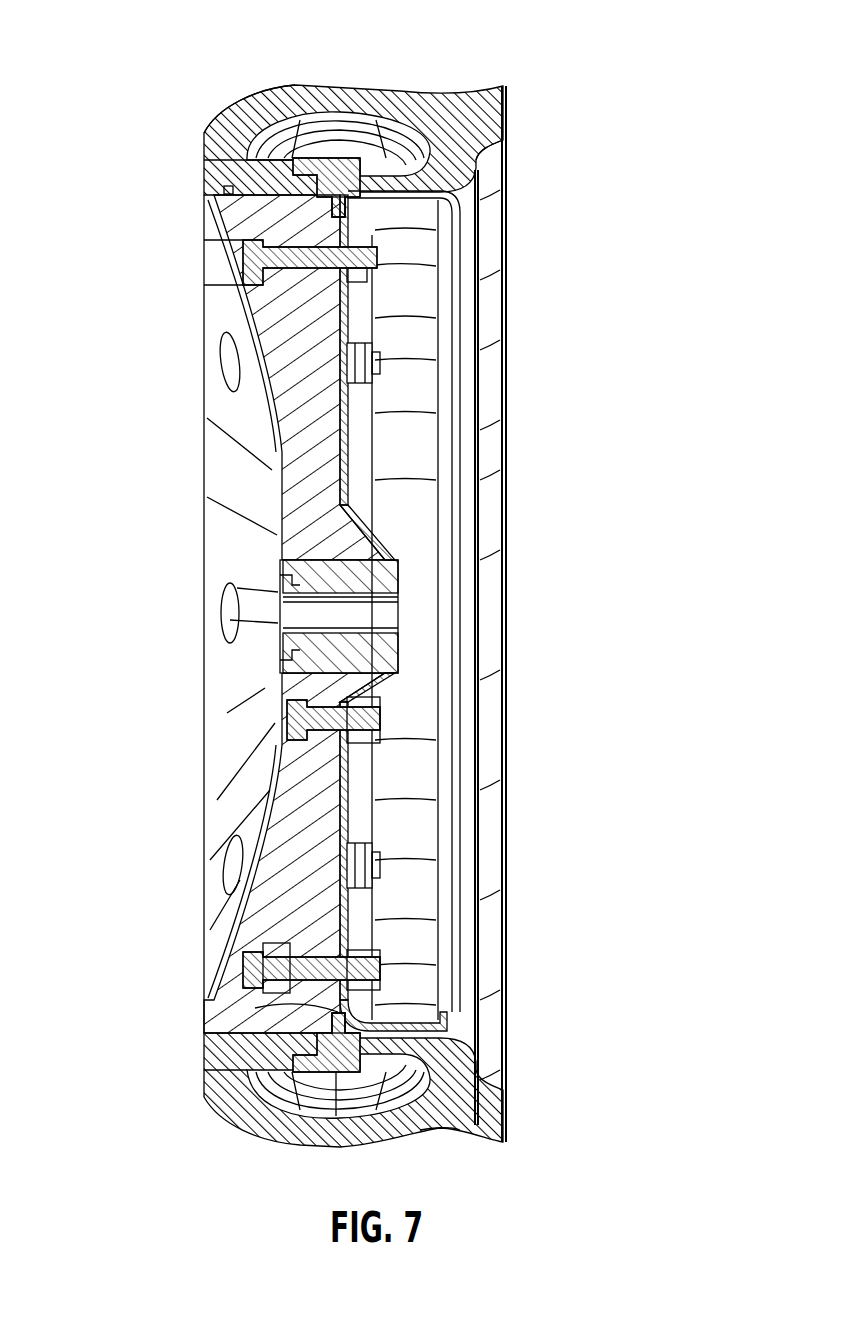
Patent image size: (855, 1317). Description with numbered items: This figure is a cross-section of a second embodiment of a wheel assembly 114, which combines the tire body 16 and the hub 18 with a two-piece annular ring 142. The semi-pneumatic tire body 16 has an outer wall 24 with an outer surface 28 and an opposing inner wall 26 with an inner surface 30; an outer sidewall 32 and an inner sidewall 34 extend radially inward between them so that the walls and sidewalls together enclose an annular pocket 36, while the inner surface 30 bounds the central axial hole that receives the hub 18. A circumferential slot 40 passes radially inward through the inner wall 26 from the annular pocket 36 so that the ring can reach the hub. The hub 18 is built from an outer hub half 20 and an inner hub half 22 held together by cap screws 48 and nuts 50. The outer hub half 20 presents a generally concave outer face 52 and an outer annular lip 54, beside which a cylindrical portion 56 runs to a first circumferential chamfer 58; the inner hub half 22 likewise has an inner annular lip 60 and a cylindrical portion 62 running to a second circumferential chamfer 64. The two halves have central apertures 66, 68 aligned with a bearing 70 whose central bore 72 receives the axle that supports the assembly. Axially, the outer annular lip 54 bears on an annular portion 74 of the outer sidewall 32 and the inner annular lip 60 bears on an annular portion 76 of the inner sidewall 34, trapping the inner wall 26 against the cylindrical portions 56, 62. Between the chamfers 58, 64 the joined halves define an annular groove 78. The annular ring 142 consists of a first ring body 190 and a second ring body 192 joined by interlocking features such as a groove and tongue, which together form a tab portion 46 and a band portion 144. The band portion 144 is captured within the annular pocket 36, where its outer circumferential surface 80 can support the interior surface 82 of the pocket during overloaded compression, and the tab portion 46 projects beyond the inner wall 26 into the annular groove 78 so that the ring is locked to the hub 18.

The wheel assembly 114 is at (92, 86).
The tire body 16 is at (403, 52).
The hub 18 is at (126, 694).
The outer hub half 20 is at (200, 538).
The inner hub half 22 is at (583, 194).
The outer wall 24 is at (337, 150).
The inner wall 26 is at (265, 243).
The outer surface 28 is at (396, 138).
The inner surface 30 is at (245, 222).
The outer sidewall 32 is at (212, 150).
The inner sidewall 34 is at (482, 166).
The annular pocket 36 is at (440, 122).
The circumferential slot 40 is at (351, 1076).
The tab portion 46 is at (305, 1028).
The cap screws 48 is at (245, 263).
The nuts 50 is at (365, 284).
The outer face 52 is at (247, 495).
The outer annular lip 54 is at (232, 1046).
The cylindrical portion 56 is at (240, 1090).
The first circumferential chamfer 58 is at (305, 1118).
The inner annular lip 60 is at (492, 1126).
The cylindrical portion 62 is at (446, 1128).
The second circumferential chamfer 64 is at (372, 1022).
The central aperture 66 is at (300, 652).
The central aperture 68 is at (394, 578).
The bearing 70 is at (282, 582).
The central bore 72 is at (290, 628).
The annular portion 74 is at (224, 190).
The annular portion 76 is at (462, 198).
The annular groove 78 is at (240, 302).
The outer circumferential surface 80 is at (302, 118).
The interior surface 82 is at (248, 163).
The annular ring 142 is at (346, 150).
The band portion 144 is at (276, 120).
The first ring body 190 is at (290, 1118).
The second ring body 192 is at (374, 1110).